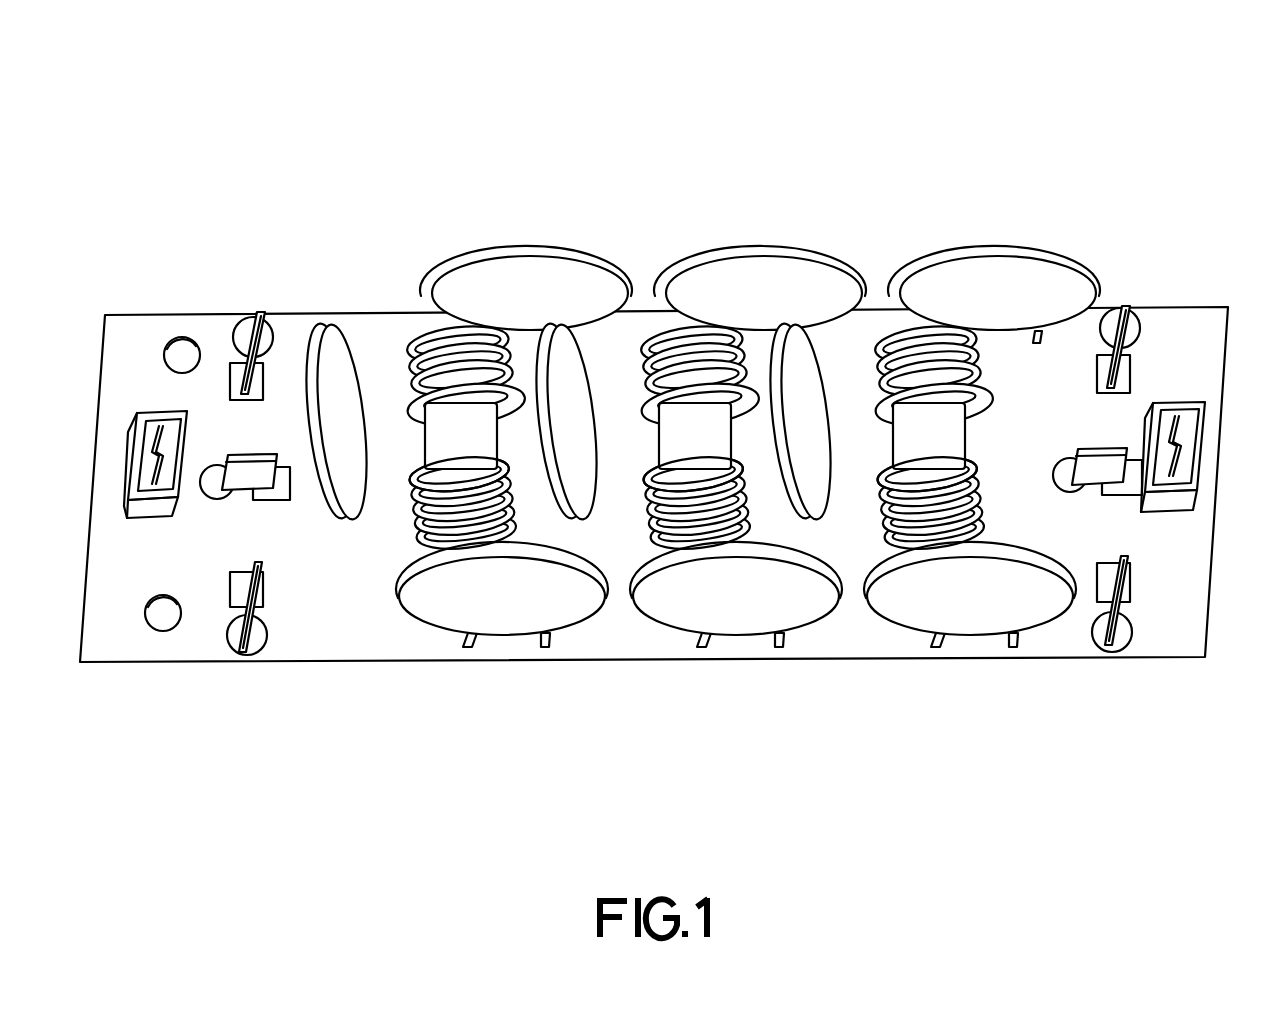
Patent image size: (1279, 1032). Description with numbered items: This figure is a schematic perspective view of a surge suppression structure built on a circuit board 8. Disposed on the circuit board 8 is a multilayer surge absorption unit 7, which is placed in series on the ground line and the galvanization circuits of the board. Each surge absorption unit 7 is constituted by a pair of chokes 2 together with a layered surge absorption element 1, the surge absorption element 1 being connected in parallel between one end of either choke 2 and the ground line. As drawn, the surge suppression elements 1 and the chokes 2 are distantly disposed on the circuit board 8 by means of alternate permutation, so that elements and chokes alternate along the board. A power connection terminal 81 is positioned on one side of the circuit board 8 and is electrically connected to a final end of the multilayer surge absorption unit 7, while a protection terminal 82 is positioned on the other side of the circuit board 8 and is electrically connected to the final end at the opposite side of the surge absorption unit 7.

The layered surge absorption element 1 is at (527, 297).
The choke 2 is at (462, 377).
The multilayer surge absorption unit 7 is at (699, 330).
The circuit board 8 is at (1187, 335).
The power connection terminal 81 is at (242, 323).
The protection terminal 82 is at (1117, 328).